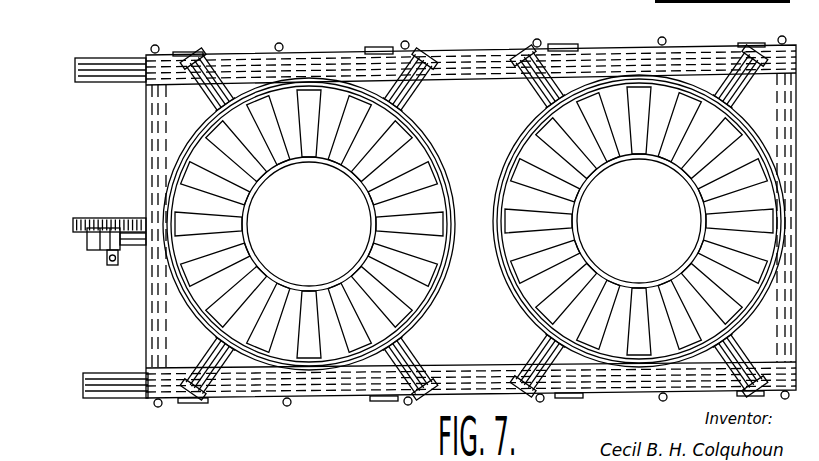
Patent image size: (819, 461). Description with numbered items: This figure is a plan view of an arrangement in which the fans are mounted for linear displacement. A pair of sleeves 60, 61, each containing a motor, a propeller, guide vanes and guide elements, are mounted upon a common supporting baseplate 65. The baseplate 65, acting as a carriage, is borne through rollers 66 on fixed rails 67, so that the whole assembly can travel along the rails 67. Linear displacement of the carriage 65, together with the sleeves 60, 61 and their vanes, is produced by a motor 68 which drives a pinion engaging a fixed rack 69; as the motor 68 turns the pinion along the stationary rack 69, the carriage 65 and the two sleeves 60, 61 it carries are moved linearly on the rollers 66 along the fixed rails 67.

The sleeve 60 is at (425, 136).
The sleeve 61 is at (508, 153).
The supporting baseplate 65 is at (185, 102).
The rollers 66 is at (376, 68).
The fixed rails 67 is at (90, 78).
The motor 68 is at (105, 243).
The fixed rack 69 is at (125, 220).